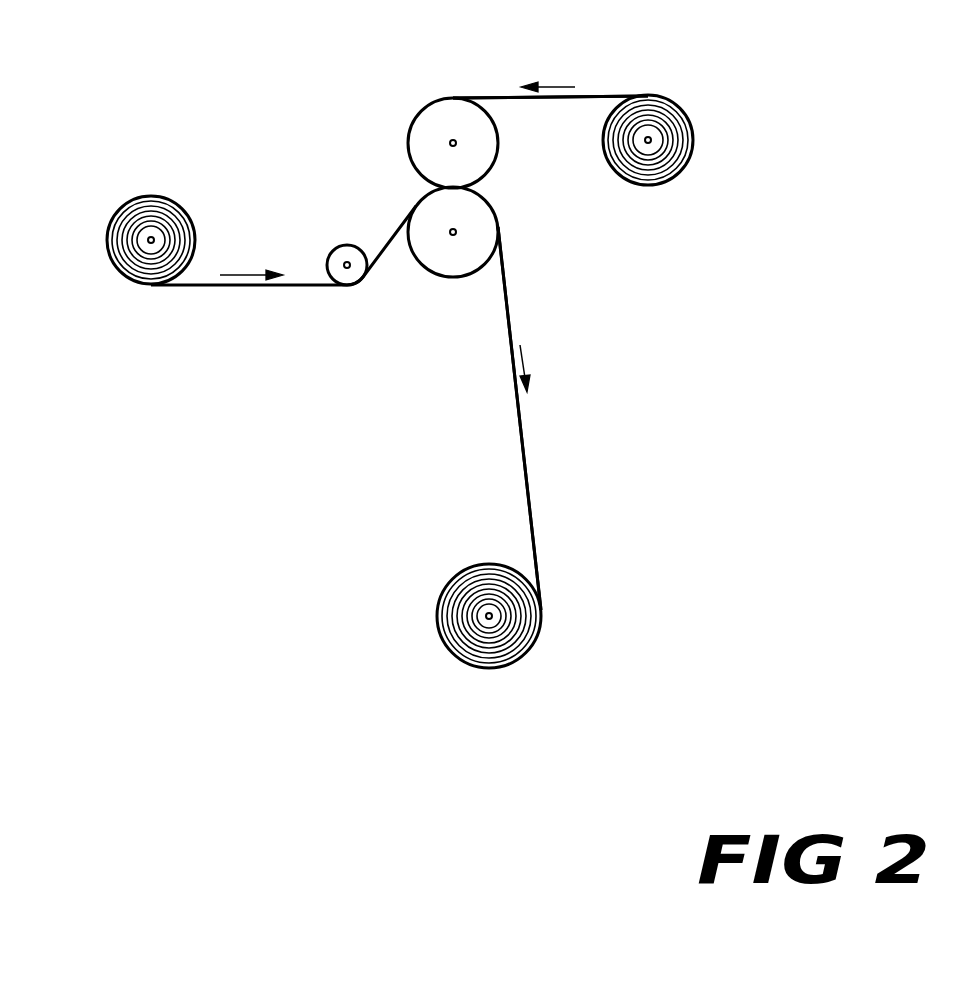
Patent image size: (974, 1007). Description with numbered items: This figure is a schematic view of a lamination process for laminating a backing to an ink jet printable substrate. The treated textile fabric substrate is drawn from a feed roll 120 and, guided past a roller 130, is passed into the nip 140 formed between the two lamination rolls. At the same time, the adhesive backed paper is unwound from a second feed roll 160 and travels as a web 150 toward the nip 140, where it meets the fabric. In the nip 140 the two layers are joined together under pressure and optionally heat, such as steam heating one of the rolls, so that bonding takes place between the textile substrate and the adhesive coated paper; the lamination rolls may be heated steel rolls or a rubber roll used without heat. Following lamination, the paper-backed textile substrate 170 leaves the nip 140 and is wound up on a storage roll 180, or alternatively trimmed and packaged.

The feed roll 120 is at (170, 207).
The guide roller 130 is at (285, 287).
The nip 140 is at (478, 185).
The film web 150 is at (578, 93).
The feed roll 160 is at (670, 153).
The paper-backed textile substrate 170 is at (520, 412).
The storage roll 180 is at (517, 648).